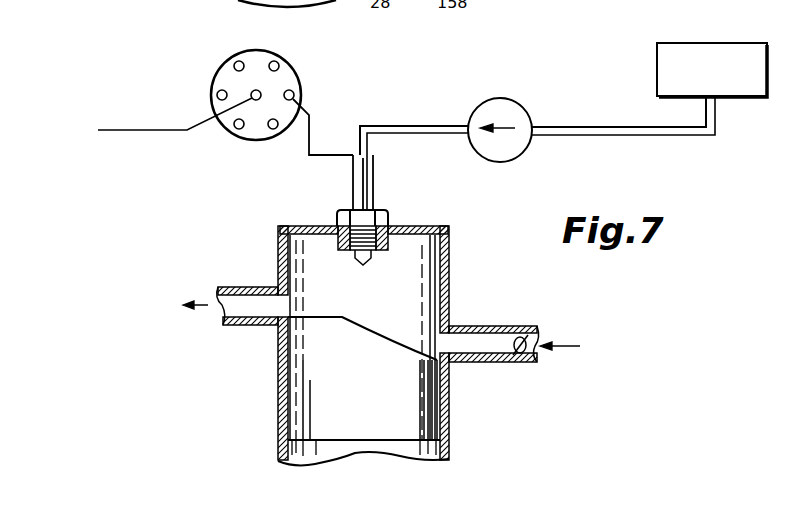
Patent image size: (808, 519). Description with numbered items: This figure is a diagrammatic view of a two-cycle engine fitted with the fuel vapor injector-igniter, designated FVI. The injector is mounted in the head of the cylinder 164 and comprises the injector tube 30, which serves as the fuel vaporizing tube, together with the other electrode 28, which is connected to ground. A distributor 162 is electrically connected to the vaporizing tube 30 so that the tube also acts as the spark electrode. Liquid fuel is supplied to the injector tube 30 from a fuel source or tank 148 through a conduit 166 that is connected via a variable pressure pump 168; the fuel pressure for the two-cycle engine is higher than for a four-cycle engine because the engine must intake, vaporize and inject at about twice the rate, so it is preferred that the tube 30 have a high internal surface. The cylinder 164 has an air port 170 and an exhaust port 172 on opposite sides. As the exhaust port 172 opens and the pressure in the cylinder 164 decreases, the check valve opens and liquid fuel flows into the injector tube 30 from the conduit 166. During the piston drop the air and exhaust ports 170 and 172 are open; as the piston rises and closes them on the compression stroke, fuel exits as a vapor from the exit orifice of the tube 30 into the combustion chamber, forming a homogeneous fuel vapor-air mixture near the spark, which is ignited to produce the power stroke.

The electrode 28 is at (363, 268).
The injector tube 30 is at (360, 199).
The fuel source or tank 148 is at (733, 18).
The distributor 162 is at (270, 140).
The cylinder 164 is at (449, 281).
The conduit 166 is at (422, 127).
The variable pressure pump 168 is at (547, 95).
The air port 170 is at (488, 342).
The exhaust port 172 is at (238, 308).